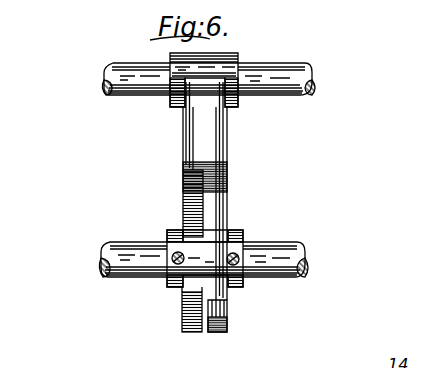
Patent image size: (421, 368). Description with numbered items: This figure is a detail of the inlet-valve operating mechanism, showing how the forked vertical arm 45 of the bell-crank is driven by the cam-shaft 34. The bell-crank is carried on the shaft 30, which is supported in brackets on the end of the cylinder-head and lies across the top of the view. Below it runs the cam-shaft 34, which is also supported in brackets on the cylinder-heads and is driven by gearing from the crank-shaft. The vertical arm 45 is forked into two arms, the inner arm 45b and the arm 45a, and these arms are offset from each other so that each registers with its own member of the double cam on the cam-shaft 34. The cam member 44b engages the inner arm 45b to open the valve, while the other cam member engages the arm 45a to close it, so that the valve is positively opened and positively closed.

The shaft 30 is at (145, 83).
The vertical arm of the bell-crank 45 is at (217, 128).
The cam member 44b is at (186, 213).
The cam-shaft 34 is at (102, 258).
The arm of the bell-crank 45a is at (218, 316).
The inner arm of the bell-crank 45b is at (192, 318).